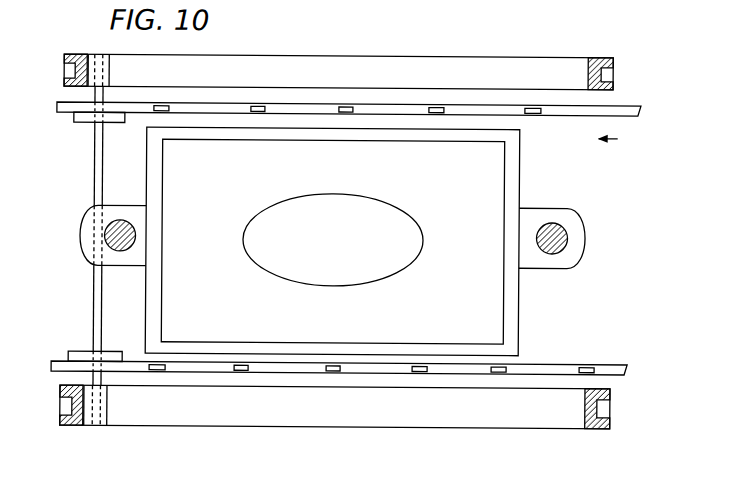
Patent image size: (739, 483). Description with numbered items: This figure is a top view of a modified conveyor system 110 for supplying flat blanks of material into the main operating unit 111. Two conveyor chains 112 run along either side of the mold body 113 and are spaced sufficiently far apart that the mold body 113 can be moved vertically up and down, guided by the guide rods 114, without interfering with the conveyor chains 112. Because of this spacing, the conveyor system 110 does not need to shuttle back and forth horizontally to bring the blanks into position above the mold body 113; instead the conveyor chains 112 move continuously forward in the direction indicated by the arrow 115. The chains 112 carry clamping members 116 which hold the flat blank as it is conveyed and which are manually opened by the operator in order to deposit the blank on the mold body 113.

The conveyor system 110 is at (67, 116).
The main operating unit 111 is at (516, 51).
The conveyor chains 112 is at (630, 110).
The mold body 113 is at (512, 178).
The guide rods 114 is at (121, 252).
The arrow 115 is at (617, 137).
The clamping members 116 is at (341, 107).